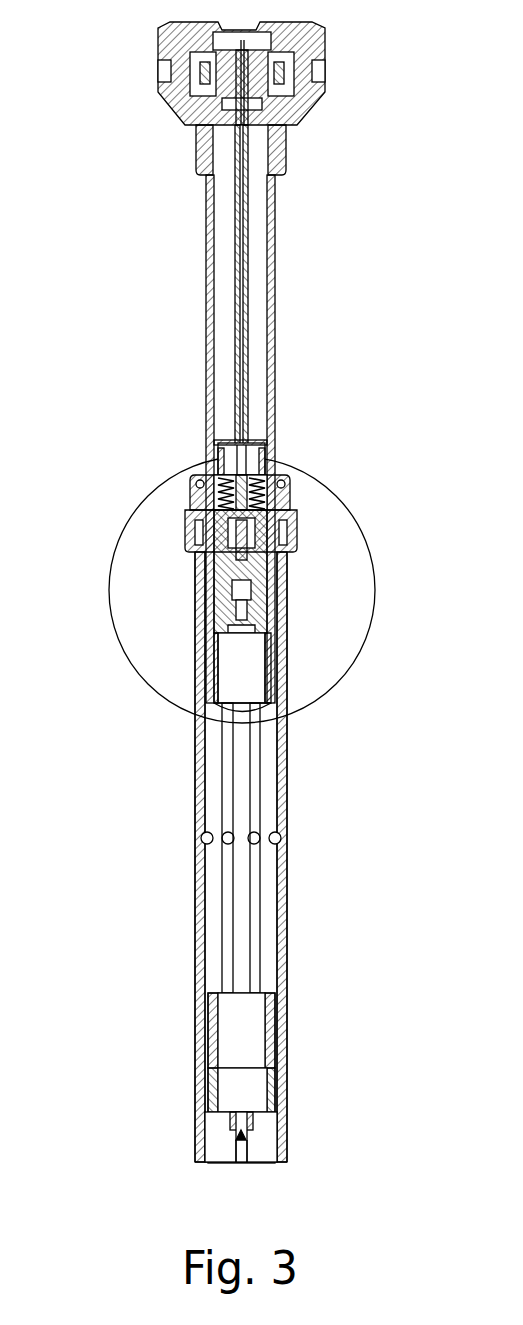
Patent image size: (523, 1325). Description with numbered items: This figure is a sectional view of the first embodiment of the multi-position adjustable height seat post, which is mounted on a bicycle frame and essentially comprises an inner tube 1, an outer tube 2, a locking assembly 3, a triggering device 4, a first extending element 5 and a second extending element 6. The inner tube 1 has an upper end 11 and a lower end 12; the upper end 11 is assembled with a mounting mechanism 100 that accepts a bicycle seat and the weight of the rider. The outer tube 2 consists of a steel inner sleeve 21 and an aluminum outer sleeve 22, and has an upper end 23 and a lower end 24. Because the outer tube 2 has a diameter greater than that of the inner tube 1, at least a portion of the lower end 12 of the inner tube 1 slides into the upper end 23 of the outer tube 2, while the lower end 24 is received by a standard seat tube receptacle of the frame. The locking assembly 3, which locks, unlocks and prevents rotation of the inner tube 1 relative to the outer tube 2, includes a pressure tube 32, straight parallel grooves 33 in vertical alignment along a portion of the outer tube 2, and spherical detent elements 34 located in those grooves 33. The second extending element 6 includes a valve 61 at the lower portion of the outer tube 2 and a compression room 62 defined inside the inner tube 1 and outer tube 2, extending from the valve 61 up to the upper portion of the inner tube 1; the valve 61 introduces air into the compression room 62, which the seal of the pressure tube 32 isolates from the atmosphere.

The mounting mechanism 100 is at (332, 33).
The upper end of inner tube 11 is at (286, 150).
The pressure tube 32 is at (248, 262).
The inner tube 1 is at (278, 366).
The first extending element 5 is at (270, 478).
The locking assembly 3 is at (274, 518).
The triggering device 4 is at (262, 575).
The upper end of outer tube 23 is at (193, 550).
The lower end of inner tube 12 is at (284, 684).
The outer sleeve 22 is at (287, 740).
The inner sleeve 21 is at (287, 791).
The spherical detent elements 34 is at (208, 838).
The outer tube 2 is at (288, 902).
The second extending element 6 is at (200, 936).
The straight parallel grooves 33 is at (228, 972).
The compression room 62 is at (287, 1031).
The lower end of outer tube 24 is at (287, 1079).
The valve 61 is at (253, 1134).